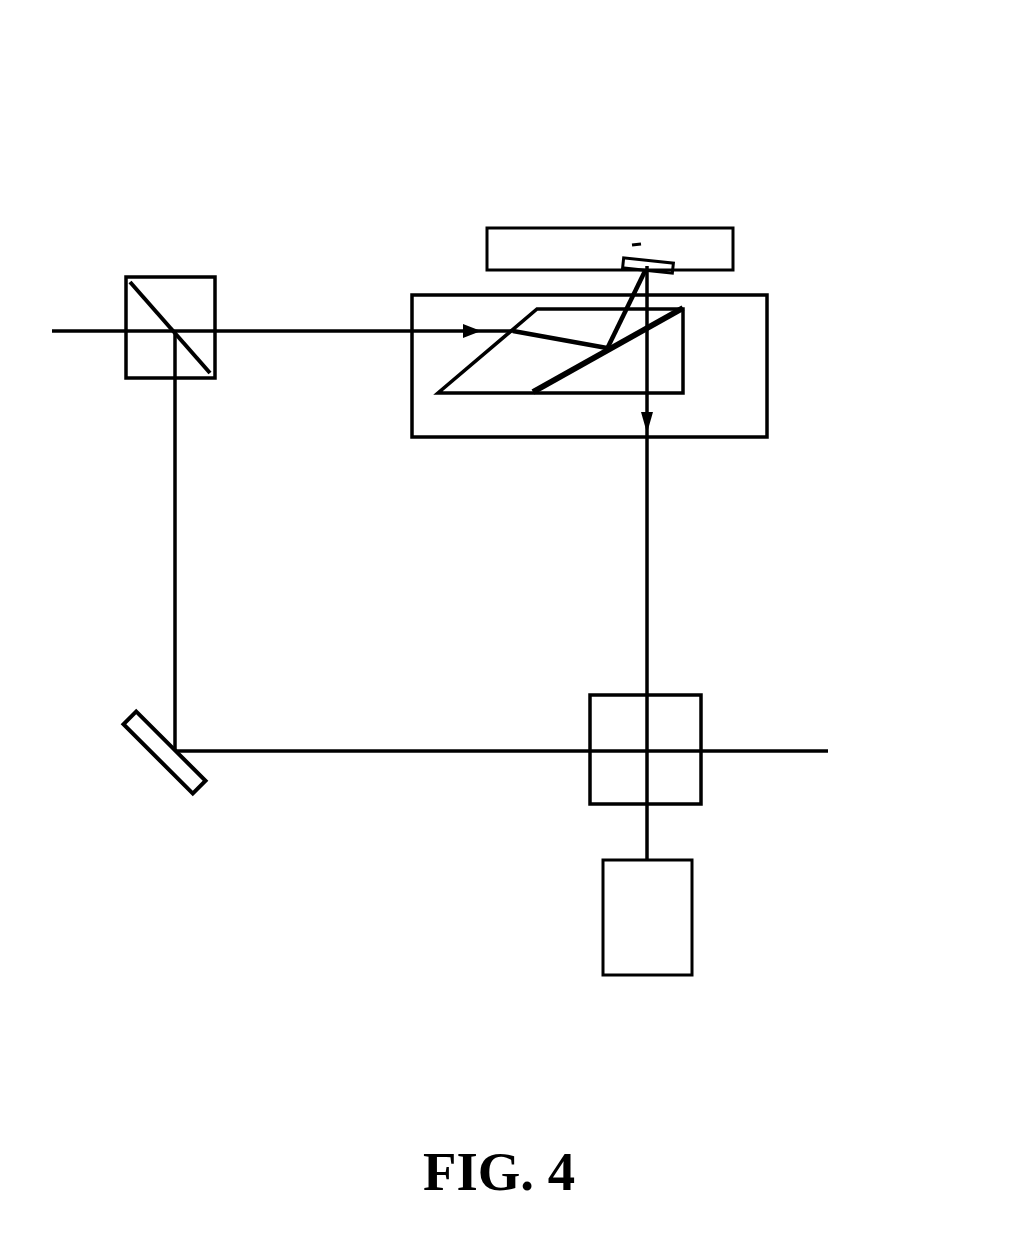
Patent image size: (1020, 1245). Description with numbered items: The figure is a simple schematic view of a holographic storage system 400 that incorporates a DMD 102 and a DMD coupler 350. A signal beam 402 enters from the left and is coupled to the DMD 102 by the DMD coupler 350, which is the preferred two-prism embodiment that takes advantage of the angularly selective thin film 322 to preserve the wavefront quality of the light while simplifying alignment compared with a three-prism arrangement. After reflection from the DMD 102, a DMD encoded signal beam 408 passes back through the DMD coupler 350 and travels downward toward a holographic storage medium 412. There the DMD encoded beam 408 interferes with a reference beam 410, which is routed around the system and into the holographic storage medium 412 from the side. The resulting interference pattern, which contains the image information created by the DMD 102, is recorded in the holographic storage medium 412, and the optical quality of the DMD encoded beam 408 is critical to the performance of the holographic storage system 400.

The holographic storage system 400 is at (192, 121).
The signal beam 402 is at (290, 331).
The DMD 102 is at (733, 228).
The DMD coupler 350 is at (767, 297).
The angularly selective thin film 322 is at (565, 380).
The DMD encoded signal beam 408 is at (649, 580).
The reference beam 410 is at (387, 751).
The holographic storage medium 412 is at (590, 804).